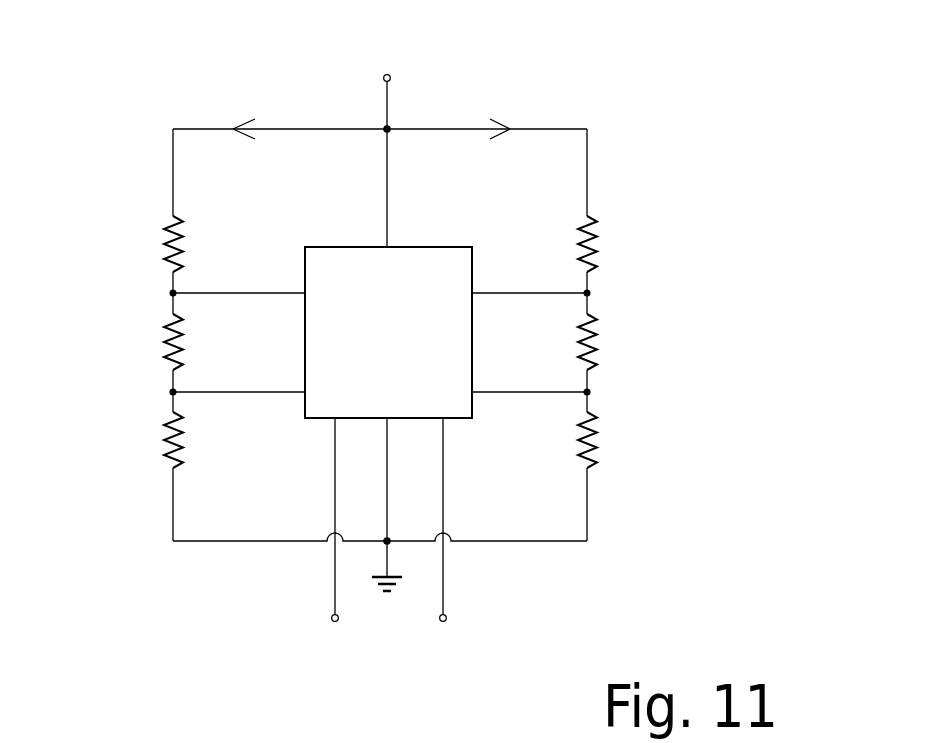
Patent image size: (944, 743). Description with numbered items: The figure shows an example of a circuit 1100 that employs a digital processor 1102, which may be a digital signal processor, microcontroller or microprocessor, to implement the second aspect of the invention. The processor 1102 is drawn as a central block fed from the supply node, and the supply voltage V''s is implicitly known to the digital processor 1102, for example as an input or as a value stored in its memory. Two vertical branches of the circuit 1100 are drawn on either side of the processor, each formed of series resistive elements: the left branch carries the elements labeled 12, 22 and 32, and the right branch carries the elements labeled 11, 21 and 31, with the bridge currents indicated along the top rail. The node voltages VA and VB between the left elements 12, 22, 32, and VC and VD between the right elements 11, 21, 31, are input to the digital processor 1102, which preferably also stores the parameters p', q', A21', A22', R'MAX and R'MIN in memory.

The circuit 1100 is at (356, 348).
The digital processor 1102 is at (432, 247).
The resistor R12 12 is at (195, 244).
The resistor R11 11 is at (566, 244).
The resistor R' 22 is at (197, 342).
The resistor R' 21 is at (563, 342).
The resistor R32 32 is at (195, 440).
The resistor R31 31 is at (563, 440).